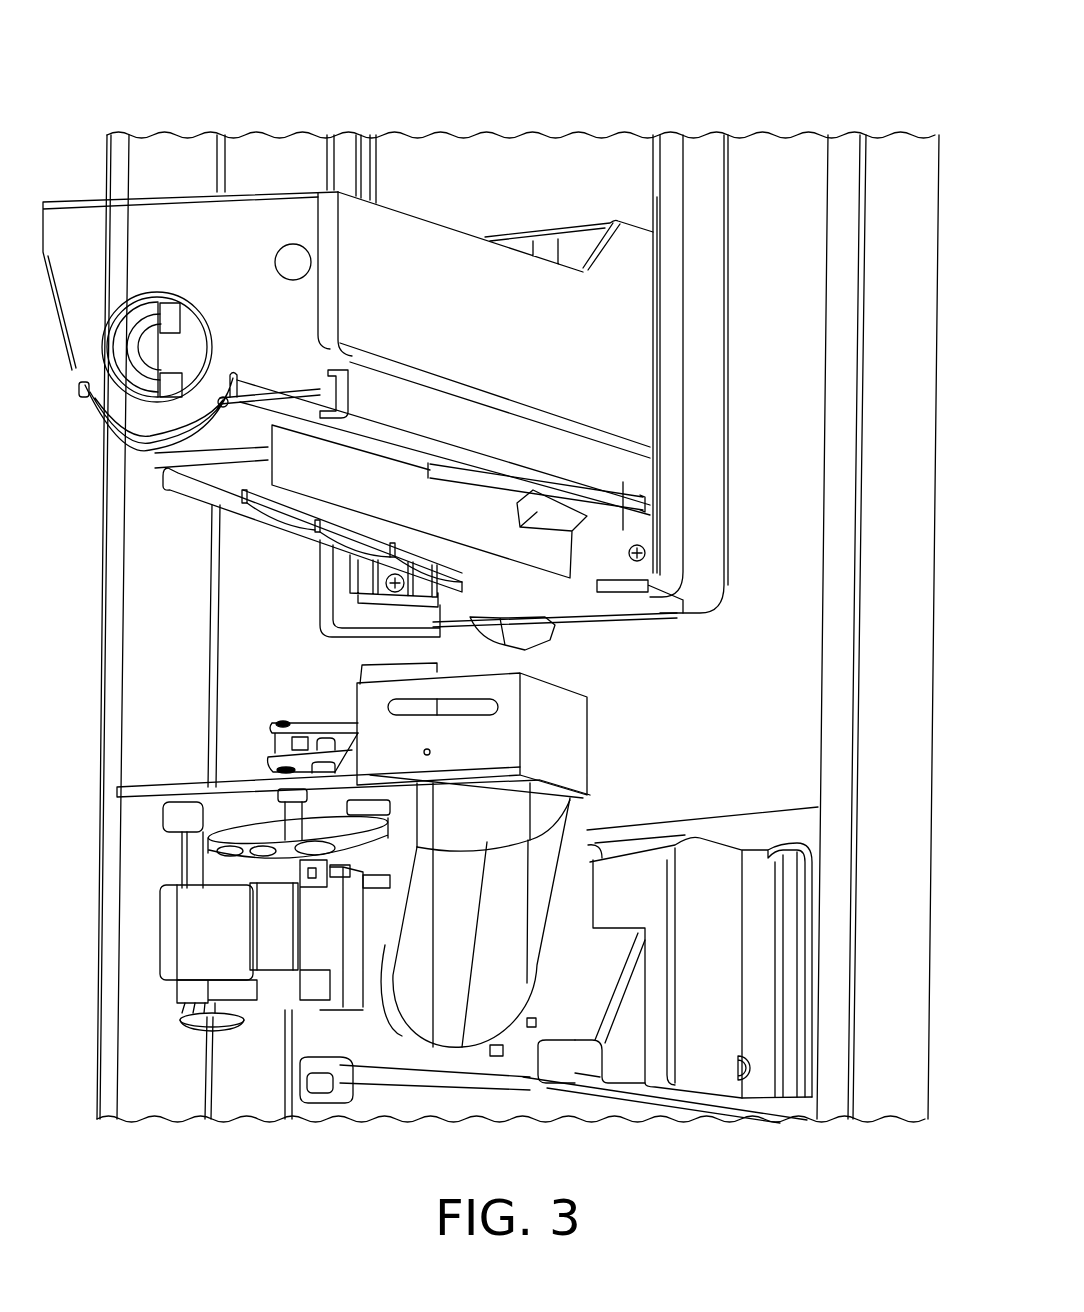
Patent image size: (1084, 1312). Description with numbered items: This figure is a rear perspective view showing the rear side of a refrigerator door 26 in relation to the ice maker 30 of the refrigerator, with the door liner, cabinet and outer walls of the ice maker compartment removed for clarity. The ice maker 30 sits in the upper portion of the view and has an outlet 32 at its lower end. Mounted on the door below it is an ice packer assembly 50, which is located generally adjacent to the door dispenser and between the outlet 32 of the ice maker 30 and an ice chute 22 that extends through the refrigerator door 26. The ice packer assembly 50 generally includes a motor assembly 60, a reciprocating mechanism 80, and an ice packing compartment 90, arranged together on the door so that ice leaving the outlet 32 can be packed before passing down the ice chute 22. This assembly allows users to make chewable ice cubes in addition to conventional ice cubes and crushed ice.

The refrigerator door 26 is at (898, 118).
The ice maker 30 is at (627, 330).
The outlet 32 is at (518, 643).
The ice packer assembly 50 is at (673, 713).
The ice packing compartment 90 is at (610, 760).
The reciprocating mechanism 80 is at (255, 747).
The motor assembly 60 is at (185, 927).
The ice chute 22 is at (517, 938).